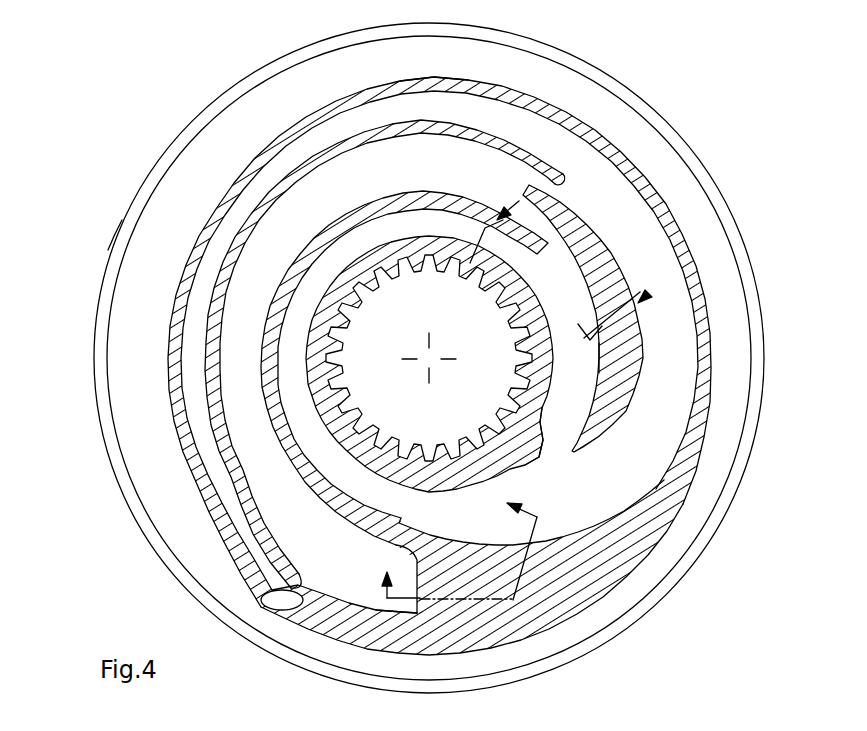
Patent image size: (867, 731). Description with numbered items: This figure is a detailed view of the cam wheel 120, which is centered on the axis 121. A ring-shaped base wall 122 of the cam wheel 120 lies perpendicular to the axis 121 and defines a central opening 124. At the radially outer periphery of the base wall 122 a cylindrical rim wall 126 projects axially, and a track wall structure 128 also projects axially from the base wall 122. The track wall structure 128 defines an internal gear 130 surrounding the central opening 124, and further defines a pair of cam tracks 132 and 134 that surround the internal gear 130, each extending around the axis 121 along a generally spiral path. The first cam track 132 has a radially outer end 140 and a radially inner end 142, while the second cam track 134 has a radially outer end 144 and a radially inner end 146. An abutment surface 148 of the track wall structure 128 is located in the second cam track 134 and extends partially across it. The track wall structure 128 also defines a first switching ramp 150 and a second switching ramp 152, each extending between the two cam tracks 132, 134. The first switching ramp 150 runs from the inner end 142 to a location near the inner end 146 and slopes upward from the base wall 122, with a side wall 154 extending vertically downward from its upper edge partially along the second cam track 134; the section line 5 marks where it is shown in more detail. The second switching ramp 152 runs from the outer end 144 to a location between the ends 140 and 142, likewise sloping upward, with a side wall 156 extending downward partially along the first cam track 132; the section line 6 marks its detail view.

The cam wheel 120 is at (180, 92).
The axis 121 is at (433, 355).
The ring-shaped base wall 122 is at (185, 178).
The central opening 124 is at (428, 329).
The cylindrical rim wall 126 is at (128, 215).
The track wall structure 128 is at (180, 278).
The internal gear 130 is at (390, 447).
The first cam track 132 is at (434, 104).
The second cam track 134 is at (488, 160).
The radially outer end 140 is at (270, 606).
The radially inner end 142 is at (498, 244).
The radially outer end 144 is at (383, 614).
The radially inner end 146 is at (556, 452).
The abutment surface 148 is at (566, 168).
The first switching ramp 150 is at (545, 290).
The second switching ramp 152 is at (490, 558).
The side wall 154 is at (560, 300).
The side wall 156 is at (476, 530).
The section line 5- 5 is at (567, 261).
The section line 6- 6 is at (457, 546).